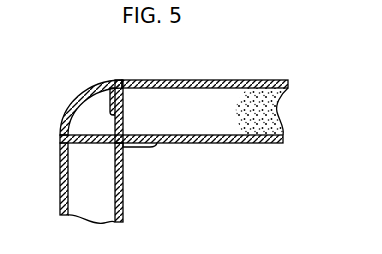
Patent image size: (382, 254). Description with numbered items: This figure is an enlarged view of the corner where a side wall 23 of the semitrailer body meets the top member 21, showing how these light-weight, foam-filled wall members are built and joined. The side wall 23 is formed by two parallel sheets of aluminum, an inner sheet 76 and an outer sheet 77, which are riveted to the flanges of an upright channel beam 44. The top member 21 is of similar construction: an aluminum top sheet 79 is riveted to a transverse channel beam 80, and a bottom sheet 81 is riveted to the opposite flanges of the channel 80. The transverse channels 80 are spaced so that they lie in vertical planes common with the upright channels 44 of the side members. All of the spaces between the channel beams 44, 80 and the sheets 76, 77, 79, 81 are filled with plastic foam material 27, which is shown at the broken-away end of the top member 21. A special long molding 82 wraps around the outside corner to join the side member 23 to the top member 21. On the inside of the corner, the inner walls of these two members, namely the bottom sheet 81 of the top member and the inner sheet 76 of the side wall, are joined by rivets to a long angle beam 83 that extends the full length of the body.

The top member 21 is at (183, 111).
The side wall 23 is at (93, 183).
The plastic foam material 27 is at (288, 88).
The upright channel beam 44 is at (104, 200).
The inner sheet 76 is at (124, 217).
The outer sheet 77 is at (60, 207).
The top sheet 79 is at (183, 80).
The transverse channel beam 80 is at (206, 122).
The bottom sheet 81 is at (254, 143).
The molding 82 is at (72, 100).
The angle beam 83 is at (137, 148).